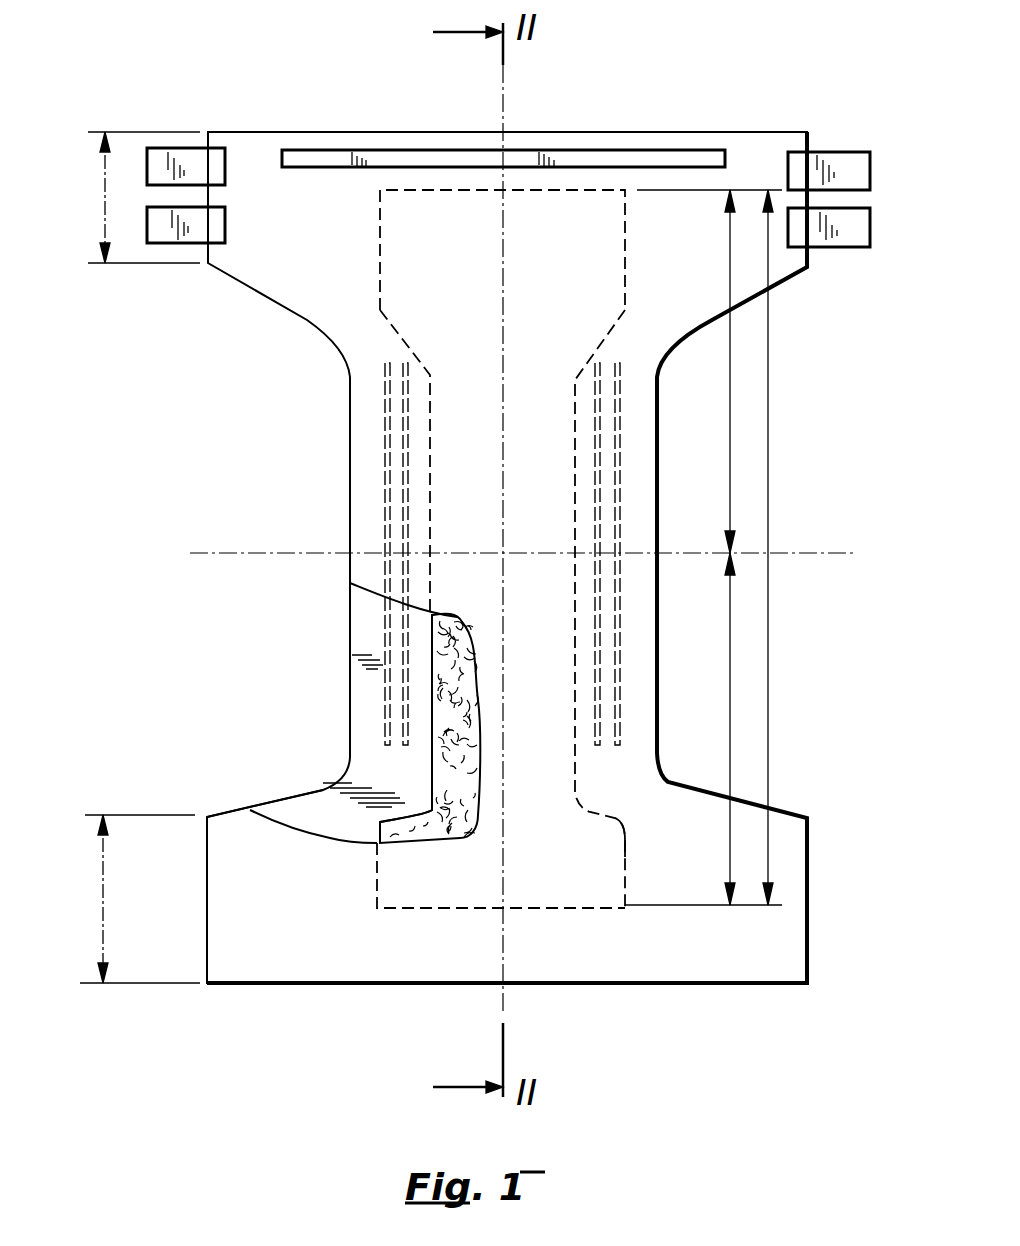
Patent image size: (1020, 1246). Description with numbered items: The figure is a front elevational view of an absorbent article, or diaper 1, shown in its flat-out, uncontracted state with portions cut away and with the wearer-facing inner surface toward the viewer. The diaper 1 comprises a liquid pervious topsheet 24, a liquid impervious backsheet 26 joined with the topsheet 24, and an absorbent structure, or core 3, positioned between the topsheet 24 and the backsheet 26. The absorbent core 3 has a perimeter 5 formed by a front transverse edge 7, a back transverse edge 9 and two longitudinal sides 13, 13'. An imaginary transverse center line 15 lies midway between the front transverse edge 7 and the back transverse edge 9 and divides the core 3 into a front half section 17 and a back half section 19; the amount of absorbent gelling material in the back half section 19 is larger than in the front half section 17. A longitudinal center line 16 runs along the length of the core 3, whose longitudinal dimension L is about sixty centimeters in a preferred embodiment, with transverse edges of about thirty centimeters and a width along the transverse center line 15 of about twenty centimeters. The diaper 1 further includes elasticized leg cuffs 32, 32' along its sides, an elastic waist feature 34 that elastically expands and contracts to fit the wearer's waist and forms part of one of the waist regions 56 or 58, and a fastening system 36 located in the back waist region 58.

The absorbent article 1 is at (802, 98).
The absorbent core 3 is at (443, 688).
The perimeter 5 is at (630, 855).
The front transverse edge 7 is at (437, 908).
The back transverse edge 9 is at (565, 190).
The longitudinal side 13 is at (358, 761).
The longitudinal side 13' is at (540, 609).
The transverse center line 15 is at (822, 553).
The longitudinal center line 16 is at (503, 100).
The front half section 17 is at (730, 693).
The back half section 19 is at (730, 428).
The topsheet 24 is at (230, 840).
The backsheet 26 is at (366, 620).
The elasticized leg cuff 32 is at (319, 567).
The elasticized leg cuff 32' is at (686, 565).
The elastic waist feature 34 is at (333, 157).
The fastening system 36 is at (160, 157).
The waist region 56 is at (103, 917).
The back waist region 58 is at (105, 197).
The longitudinal dimension L is at (768, 675).